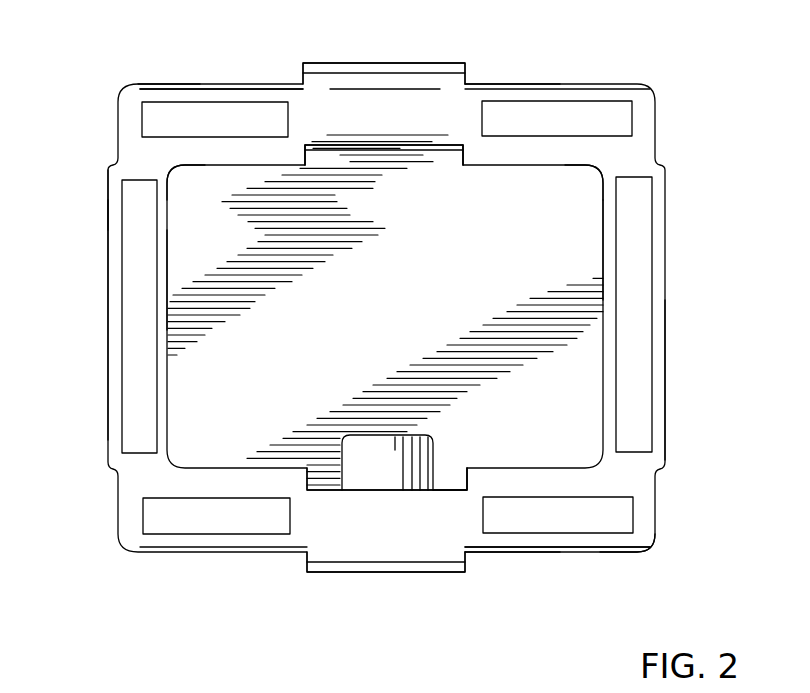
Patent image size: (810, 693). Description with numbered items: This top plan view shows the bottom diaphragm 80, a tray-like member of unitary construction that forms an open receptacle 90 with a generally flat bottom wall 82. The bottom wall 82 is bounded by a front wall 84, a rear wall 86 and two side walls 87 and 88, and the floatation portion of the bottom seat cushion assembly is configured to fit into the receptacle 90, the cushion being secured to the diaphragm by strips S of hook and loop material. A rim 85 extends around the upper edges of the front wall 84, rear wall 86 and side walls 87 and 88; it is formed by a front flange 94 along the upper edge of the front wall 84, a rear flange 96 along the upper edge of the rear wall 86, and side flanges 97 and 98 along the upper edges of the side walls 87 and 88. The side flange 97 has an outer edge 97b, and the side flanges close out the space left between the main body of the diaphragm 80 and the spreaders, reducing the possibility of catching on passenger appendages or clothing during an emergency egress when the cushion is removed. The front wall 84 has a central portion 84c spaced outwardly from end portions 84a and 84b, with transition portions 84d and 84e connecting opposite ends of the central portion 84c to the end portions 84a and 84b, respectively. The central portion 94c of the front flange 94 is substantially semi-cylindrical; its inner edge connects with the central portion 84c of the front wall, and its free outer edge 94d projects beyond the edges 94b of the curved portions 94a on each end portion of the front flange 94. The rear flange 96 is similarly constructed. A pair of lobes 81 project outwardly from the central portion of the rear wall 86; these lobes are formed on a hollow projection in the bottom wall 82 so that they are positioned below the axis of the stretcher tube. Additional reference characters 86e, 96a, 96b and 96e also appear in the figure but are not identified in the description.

The bottom diaphragm 80 is at (118, 533).
The lobes 81 is at (388, 468).
The bottom wall 82 is at (460, 300).
The front wall 84 is at (527, 164).
The end portion of front wall 84a is at (233, 171).
The end portion of front wall 84b is at (582, 168).
The central portion of front wall 84c is at (368, 156).
The transition portion 84d is at (310, 155).
The transition portion 84e is at (462, 155).
The rim 85 is at (545, 128).
The rear wall 86 is at (195, 468).
The notch edge 86e is at (443, 473).
The side wall 87 is at (168, 272).
The side wall 88 is at (601, 222).
The open receptacle 90 is at (201, 382).
The front flange 94 is at (190, 152).
The curved portions of front flange 94a is at (160, 92).
The edges of curved portions 94b is at (484, 93).
The central portion of front flange 94c is at (376, 102).
The free outer edge 94d is at (323, 63).
The rear flange 96 is at (590, 534).
The bottom member portion 96a is at (515, 543).
The bottom member corner 96b is at (627, 552).
The bottom tab 96e is at (410, 572).
The side flange 97 is at (138, 232).
The outer edge of side flange 97b is at (113, 204).
The side flange 98 is at (622, 398).
The strips of loop and hook material S is at (160, 117).